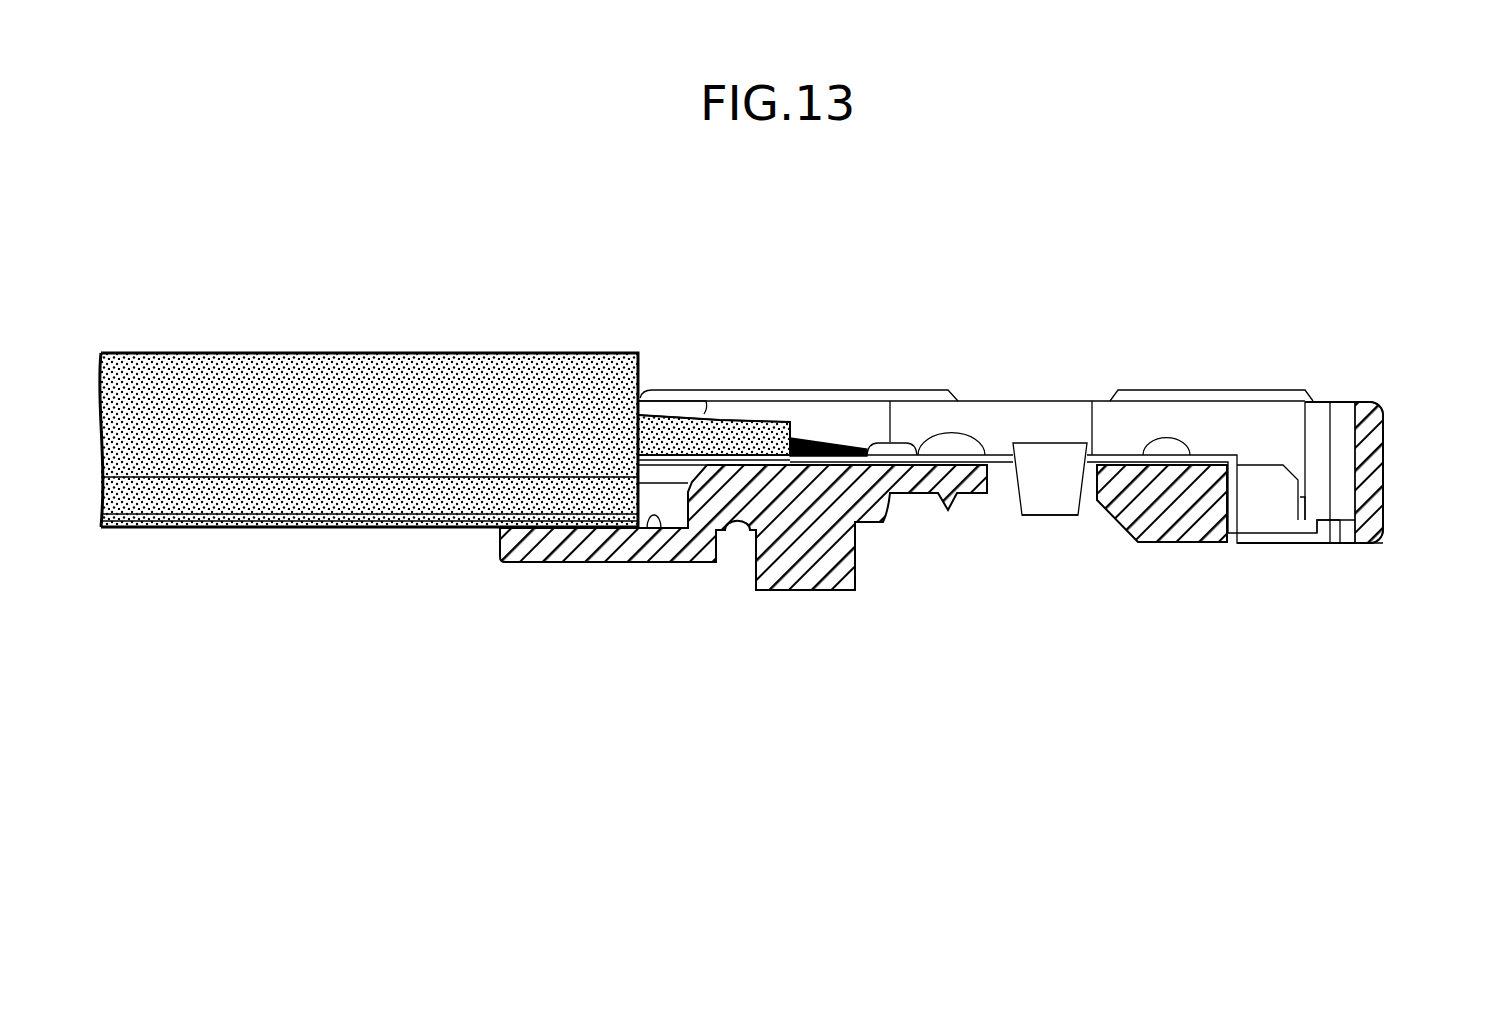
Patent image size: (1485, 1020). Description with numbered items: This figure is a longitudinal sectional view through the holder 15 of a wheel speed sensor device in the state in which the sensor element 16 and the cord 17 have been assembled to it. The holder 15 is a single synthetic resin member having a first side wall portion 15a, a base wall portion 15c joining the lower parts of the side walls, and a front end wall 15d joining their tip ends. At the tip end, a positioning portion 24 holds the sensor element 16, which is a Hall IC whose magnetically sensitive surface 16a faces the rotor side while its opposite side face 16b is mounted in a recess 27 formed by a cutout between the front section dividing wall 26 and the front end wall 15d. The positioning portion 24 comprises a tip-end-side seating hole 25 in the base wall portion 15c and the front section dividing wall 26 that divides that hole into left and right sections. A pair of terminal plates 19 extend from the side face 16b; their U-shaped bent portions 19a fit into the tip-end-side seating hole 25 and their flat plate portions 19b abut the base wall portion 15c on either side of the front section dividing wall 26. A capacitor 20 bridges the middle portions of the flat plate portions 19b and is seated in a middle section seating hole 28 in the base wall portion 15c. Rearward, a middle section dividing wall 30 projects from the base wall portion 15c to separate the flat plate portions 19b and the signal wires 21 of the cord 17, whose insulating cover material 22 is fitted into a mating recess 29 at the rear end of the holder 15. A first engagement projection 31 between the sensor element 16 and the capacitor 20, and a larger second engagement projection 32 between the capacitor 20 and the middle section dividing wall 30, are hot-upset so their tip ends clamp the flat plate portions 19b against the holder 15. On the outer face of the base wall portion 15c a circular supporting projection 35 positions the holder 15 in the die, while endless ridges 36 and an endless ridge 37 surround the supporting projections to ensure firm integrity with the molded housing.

The holder 15 is at (872, 386).
The first side wall portion 15a is at (1103, 400).
The base wall portion 15c is at (935, 432).
The front end wall 15d is at (1377, 485).
The sensor element 16 is at (1342, 450).
The magnetically sensitive surface 16a is at (1340, 402).
The side face 16b is at (1345, 545).
The cord 17 is at (452, 340).
The terminal plates 19 is at (1202, 446).
The bent portions 19a is at (1263, 545).
The flat plate portions 19b is at (1003, 455).
The capacitor 20 is at (1062, 462).
The signal wires 21 is at (760, 430).
The insulating cover material 22 is at (311, 375).
The positioning portion 24 is at (1348, 430).
The tip-end-side seating hole 25 is at (1243, 520).
The front section dividing wall 26 is at (1258, 487).
The recess 27 is at (1340, 530).
The middle section seating hole 28 is at (1073, 500).
The mating recess 29 is at (650, 520).
The middle section dividing wall 30 is at (793, 410).
The first engagement projection 31 is at (1162, 440).
The second engagement projection 32 is at (970, 433).
The supporting projection 35 is at (805, 590).
The endless ridges 36 is at (1223, 388).
The endless ridge 37 is at (676, 388).